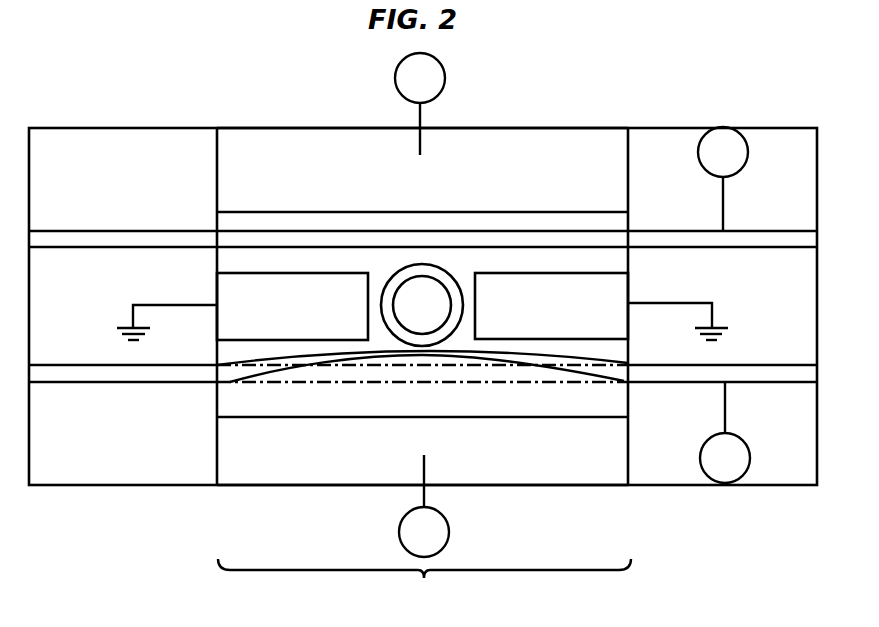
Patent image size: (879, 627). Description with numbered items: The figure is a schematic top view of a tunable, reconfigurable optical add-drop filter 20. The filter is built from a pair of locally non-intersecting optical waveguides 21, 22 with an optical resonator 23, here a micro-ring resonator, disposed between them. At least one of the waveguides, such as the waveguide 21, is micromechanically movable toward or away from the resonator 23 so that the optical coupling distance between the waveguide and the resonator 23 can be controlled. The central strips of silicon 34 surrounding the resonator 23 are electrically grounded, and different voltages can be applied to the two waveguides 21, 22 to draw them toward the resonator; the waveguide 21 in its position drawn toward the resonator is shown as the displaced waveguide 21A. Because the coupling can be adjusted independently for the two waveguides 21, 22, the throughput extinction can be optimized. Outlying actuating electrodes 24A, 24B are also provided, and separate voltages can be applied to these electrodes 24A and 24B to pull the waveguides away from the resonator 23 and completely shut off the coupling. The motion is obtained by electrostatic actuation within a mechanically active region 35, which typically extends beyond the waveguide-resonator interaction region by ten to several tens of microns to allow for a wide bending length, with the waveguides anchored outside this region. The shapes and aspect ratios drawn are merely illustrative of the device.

The tunable, reconfigurable optical add-drop filter 20 is at (640, 92).
The optical waveguide 21 is at (297, 382).
The waveguide in drawn-toward position 21A is at (400, 365).
The optical waveguide 22 is at (450, 347).
The optical resonator 23 is at (395, 272).
The actuating electrode 24A is at (513, 485).
The actuating electrode 24B is at (327, 128).
The central strips of silicon 34 is at (305, 318).
The mechanically active region 35 is at (424, 582).